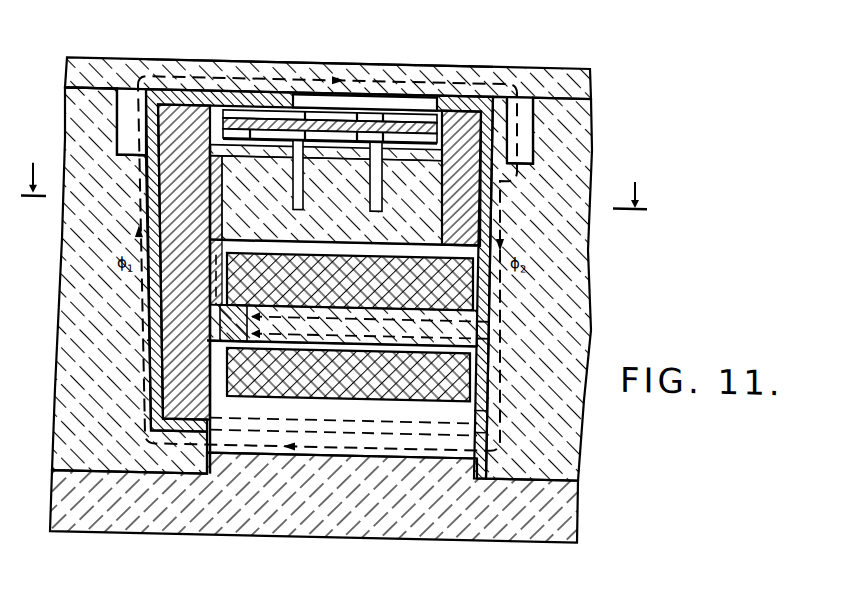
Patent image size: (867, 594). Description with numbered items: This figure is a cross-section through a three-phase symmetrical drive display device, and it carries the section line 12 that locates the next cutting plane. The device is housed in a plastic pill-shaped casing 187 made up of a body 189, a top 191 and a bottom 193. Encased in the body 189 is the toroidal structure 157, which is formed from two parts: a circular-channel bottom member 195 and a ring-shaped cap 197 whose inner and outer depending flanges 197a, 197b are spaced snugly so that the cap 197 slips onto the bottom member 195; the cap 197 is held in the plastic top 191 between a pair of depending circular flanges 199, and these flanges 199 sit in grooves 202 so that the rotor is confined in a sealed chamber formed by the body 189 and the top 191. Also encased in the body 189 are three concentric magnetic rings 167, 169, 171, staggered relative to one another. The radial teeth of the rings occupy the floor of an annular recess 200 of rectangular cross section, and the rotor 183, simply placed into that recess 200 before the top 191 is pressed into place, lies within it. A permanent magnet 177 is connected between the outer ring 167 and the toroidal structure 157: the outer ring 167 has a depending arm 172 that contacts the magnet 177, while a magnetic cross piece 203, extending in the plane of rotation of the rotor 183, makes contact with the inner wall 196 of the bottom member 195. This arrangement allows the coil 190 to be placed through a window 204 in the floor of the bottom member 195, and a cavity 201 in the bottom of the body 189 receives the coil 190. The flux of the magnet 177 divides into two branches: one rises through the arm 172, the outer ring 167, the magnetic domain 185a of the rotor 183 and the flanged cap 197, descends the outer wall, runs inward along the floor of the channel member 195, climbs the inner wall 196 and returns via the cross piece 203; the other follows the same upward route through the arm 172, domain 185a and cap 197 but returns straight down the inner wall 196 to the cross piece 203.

The section line 12- 12 is at (335, 168).
The toroidal structure 157 is at (145, 334).
The outer magnetic ring 167 is at (205, 206).
The second magnetic ring 169 is at (287, 190).
The third magnetic ring 171 is at (369, 188).
The depending arm 172 is at (212, 273).
The permanent magnet 177 is at (238, 341).
The rotor 183 is at (302, 142).
The magnetic domain 185a is at (254, 106).
The pill-shaped casing 187 is at (98, 54).
The body 189 is at (582, 266).
The coil 190 is at (335, 387).
The top 191 is at (390, 55).
The bottom 193 is at (262, 527).
The circular-channel bottom member 195 is at (489, 421).
The inner wall 196 is at (484, 403).
The ring-shaped cap 197 is at (216, 85).
The inner depending flange 197a is at (141, 144).
The outer depending flange 197b is at (519, 109).
The depending circular flanges 199 is at (86, 100).
The annular recess 200 is at (441, 141).
The cavity 201 is at (455, 449).
The grooves 202 is at (116, 127).
The magnetic cross piece 203 is at (428, 320).
The window 204 is at (394, 412).